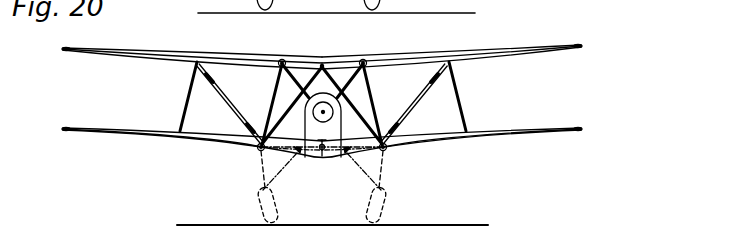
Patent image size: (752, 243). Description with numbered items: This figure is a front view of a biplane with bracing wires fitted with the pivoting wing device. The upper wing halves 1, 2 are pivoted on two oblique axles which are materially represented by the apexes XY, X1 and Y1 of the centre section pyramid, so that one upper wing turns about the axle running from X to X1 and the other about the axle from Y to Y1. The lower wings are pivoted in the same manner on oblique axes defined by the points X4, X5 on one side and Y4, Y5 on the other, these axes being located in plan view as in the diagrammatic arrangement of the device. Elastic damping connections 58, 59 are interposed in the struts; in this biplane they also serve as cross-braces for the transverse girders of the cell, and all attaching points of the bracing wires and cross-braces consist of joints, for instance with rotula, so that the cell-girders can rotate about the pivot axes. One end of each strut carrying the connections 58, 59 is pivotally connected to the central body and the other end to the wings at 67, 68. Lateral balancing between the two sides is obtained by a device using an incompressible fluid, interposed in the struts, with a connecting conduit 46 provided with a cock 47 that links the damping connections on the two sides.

The upper wing (left portion) 1 is at (164, 53).
The upper wing (right portion) 2 is at (532, 50).
The wing pivot connection 67 is at (198, 63).
The wing pivot connection 68 is at (450, 62).
The elastic damping connection 58 is at (224, 98).
The elastic damping connection 59 is at (414, 108).
The apex of centre section pyramid X1 is at (287, 50).
The apex of centre section pyramid Y1 is at (369, 50).
The centre section pyramid apexes XY is at (322, 57).
The lower wing pivot axis point X4 is at (295, 162).
The lower wing pivot axis point Y4 is at (349, 162).
The lower wing pivot axis point X5 is at (248, 160).
The lower wing pivot axis point Y5 is at (395, 159).
The connecting conduit 46 is at (288, 148).
The cock 47 is at (321, 153).